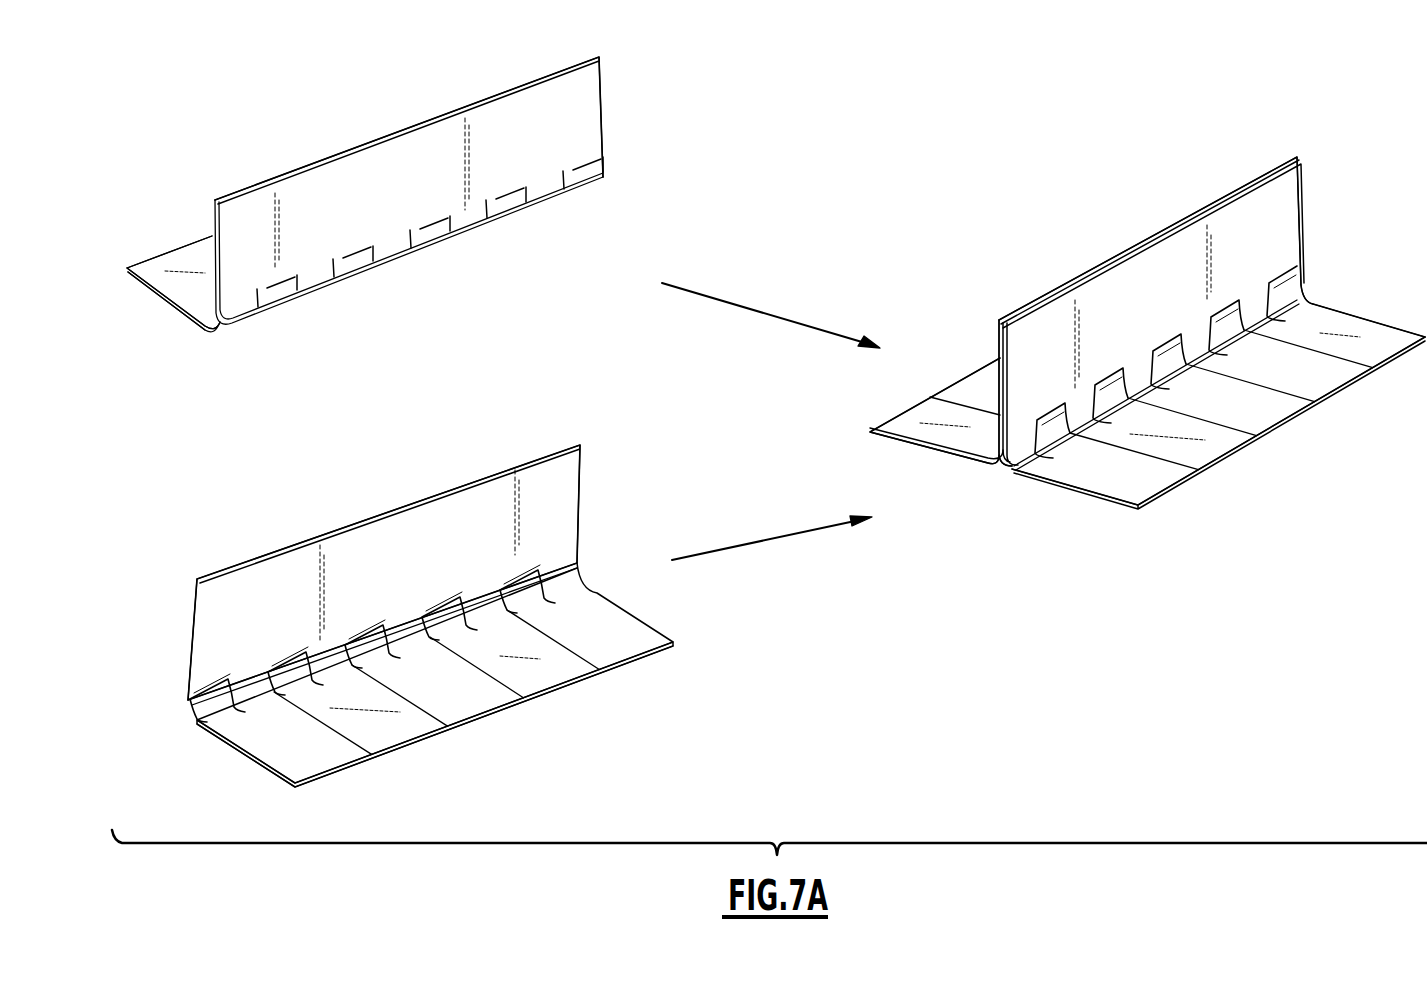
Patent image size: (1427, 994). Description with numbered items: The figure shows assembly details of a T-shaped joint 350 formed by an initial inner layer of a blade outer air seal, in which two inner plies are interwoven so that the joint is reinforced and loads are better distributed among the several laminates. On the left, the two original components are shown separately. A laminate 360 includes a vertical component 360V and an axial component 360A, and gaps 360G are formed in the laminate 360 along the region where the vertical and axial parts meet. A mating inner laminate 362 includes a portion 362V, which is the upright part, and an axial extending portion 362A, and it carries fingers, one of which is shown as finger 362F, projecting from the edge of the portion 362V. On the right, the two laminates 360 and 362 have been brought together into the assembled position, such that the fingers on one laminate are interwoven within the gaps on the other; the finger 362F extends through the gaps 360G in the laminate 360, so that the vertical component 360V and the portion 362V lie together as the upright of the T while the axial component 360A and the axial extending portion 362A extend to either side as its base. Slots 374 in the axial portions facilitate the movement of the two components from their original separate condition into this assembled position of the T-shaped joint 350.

The T-shaped joint 350 is at (1331, 232).
The laminate 360 is at (450, 510).
The vertical component 360V is at (208, 650).
The axial component 360A is at (268, 750).
The gaps 360G is at (557, 580).
The mating inner laminate 362 is at (363, 167).
The portion 362V is at (597, 119).
The axial extending portion 362A is at (180, 294).
The finger 362F is at (293, 293).
The slots 374 is at (370, 753).